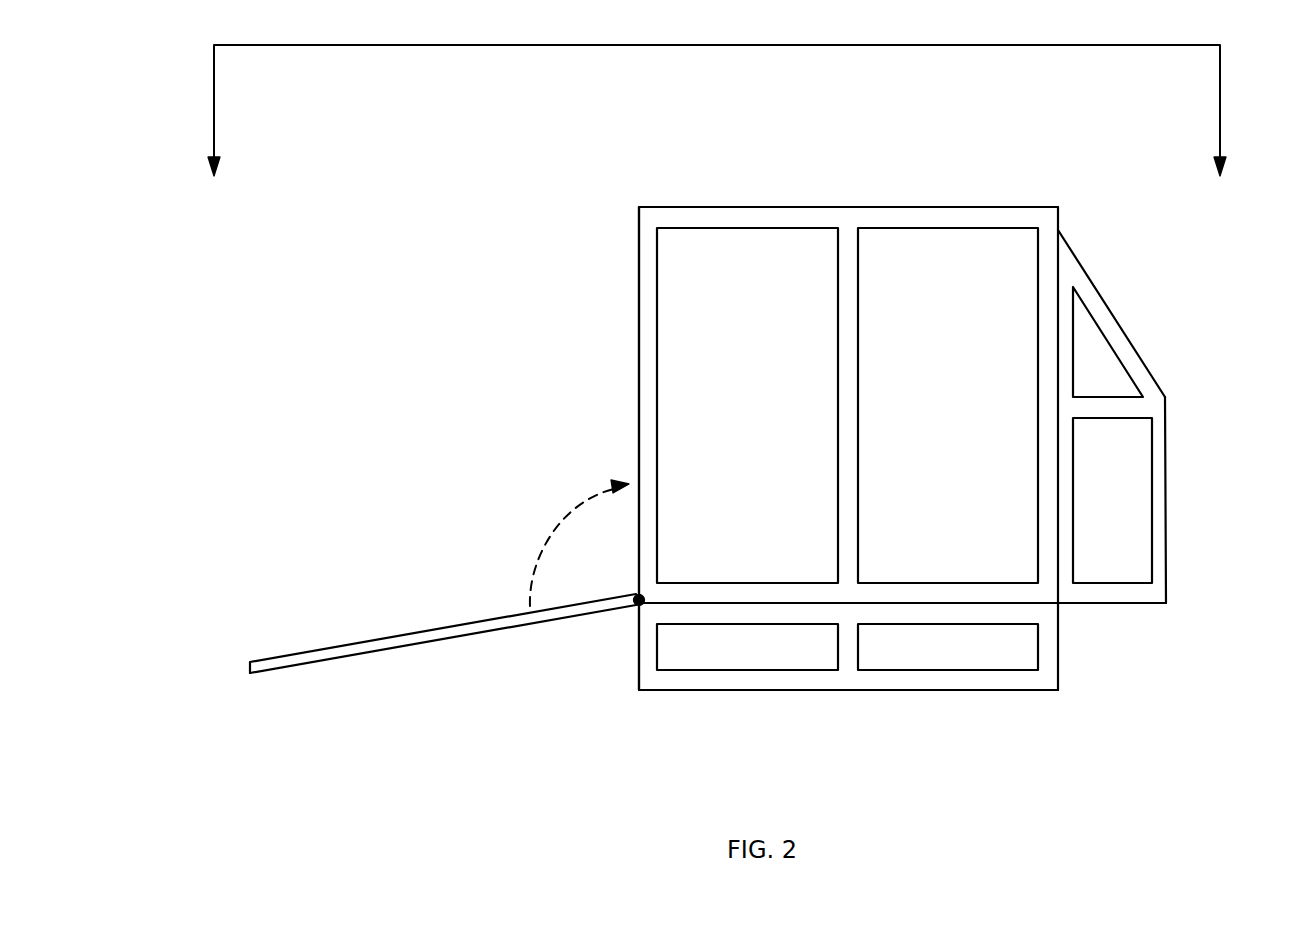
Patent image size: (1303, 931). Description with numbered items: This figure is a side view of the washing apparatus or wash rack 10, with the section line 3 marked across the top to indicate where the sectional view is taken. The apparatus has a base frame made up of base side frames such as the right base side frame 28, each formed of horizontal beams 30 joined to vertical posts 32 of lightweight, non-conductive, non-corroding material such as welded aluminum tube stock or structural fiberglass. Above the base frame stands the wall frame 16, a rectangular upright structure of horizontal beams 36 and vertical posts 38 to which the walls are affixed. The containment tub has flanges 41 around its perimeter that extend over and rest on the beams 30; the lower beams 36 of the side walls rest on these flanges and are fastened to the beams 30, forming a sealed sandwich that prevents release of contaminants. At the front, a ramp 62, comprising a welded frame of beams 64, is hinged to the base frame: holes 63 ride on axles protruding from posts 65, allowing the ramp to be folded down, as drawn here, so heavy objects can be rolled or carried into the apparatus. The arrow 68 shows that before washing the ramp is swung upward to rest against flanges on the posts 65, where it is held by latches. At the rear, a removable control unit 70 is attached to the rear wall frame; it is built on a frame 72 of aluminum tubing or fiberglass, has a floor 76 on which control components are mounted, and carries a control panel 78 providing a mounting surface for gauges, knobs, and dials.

The section line 3- 3 is at (718, 127).
The washing apparatus 10 is at (568, 140).
The wall frame 16 is at (702, 189).
The horizontal beams 36 is at (795, 213).
The vertical posts 38 is at (648, 264).
The posts 65 is at (608, 354).
The flanges 41 is at (687, 661).
The right base side frame 28 is at (757, 684).
The vertical posts 32 is at (850, 658).
The horizontal beams 30 is at (960, 678).
The control unit 70 is at (1162, 437).
The frame 72 is at (1165, 527).
The control panel 78 is at (1101, 294).
The floor 76 is at (1124, 580).
The ramp 62 is at (428, 635).
The beams 64 is at (390, 650).
The holes 63 is at (633, 609).
The arrow 68 is at (553, 531).